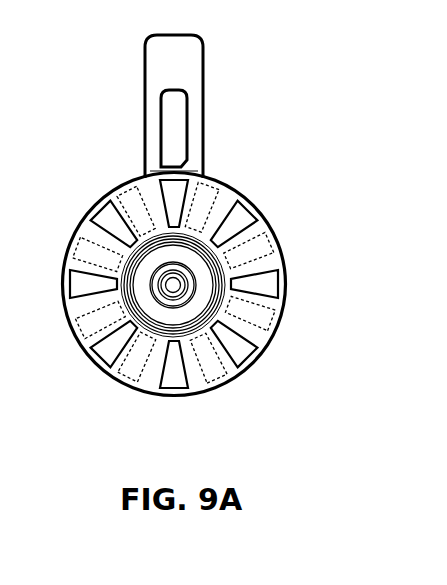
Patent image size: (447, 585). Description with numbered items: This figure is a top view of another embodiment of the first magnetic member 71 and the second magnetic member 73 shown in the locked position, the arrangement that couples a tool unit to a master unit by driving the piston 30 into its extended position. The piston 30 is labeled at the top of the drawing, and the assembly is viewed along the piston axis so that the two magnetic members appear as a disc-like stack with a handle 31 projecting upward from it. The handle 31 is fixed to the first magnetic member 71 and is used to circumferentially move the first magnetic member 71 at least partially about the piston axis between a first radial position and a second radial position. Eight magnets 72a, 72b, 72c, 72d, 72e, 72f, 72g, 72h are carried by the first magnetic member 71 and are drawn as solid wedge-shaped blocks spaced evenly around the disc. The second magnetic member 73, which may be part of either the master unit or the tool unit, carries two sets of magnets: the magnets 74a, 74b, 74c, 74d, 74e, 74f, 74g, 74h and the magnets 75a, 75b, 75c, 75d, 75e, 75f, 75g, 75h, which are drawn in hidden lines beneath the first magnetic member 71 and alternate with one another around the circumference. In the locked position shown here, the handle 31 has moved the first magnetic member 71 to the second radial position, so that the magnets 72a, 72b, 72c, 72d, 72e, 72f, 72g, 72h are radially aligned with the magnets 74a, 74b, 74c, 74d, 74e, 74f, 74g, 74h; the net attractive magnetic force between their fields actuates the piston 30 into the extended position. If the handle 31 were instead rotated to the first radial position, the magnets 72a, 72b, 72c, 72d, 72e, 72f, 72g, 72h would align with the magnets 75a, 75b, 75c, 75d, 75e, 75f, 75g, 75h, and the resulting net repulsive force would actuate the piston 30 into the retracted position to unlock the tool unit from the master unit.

The piston 30 is at (178, 11).
The handle 31 is at (203, 96).
The first magnetic member 71 is at (278, 329).
The second magnetic member 73 is at (289, 306).
The magnet 72a is at (181, 186).
The magnet 72b is at (248, 222).
The magnet 72c is at (262, 283).
The magnet 72d is at (243, 348).
The magnet 72e is at (173, 380).
The magnet 72f is at (98, 350).
The magnet 72g is at (68, 296).
The magnet 72h is at (92, 222).
The magnet 74a is at (141, 188).
The magnet 74b is at (236, 200).
The magnet 74c is at (270, 256).
The magnet 74d is at (262, 346).
The magnet 74e is at (200, 372).
The magnet 74f is at (105, 363).
The magnet 74g is at (66, 318).
The magnet 74h is at (82, 240).
The magnet 75a is at (110, 203).
The magnet 75b is at (198, 200).
The magnet 75c is at (258, 242).
The magnet 75d is at (283, 300).
The magnet 75e is at (216, 366).
The magnet 75f is at (135, 380).
The magnet 75g is at (85, 325).
The magnet 75h is at (74, 258).